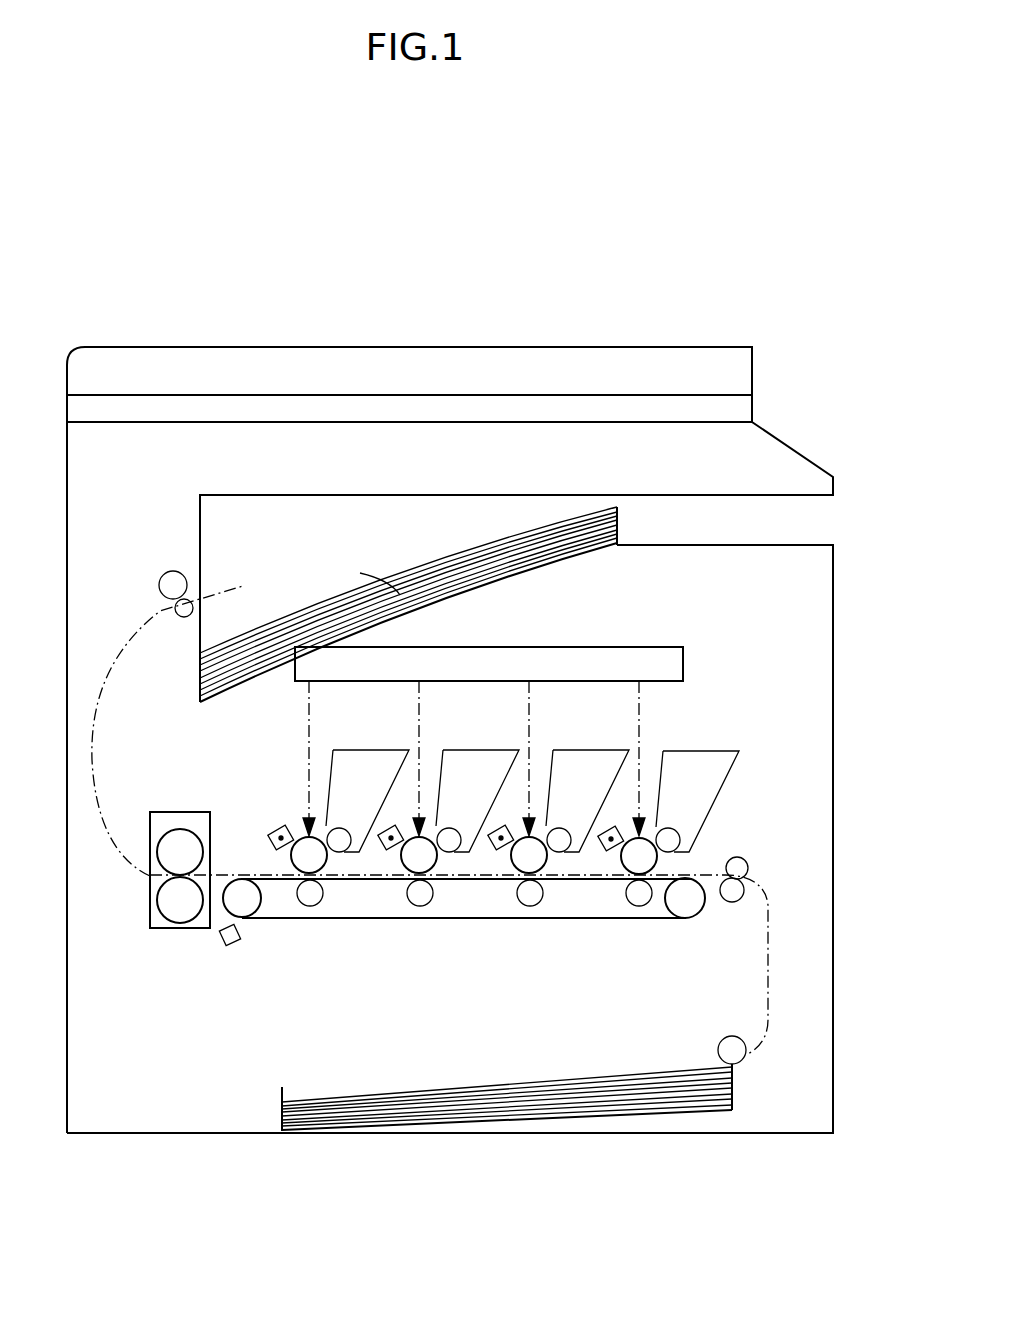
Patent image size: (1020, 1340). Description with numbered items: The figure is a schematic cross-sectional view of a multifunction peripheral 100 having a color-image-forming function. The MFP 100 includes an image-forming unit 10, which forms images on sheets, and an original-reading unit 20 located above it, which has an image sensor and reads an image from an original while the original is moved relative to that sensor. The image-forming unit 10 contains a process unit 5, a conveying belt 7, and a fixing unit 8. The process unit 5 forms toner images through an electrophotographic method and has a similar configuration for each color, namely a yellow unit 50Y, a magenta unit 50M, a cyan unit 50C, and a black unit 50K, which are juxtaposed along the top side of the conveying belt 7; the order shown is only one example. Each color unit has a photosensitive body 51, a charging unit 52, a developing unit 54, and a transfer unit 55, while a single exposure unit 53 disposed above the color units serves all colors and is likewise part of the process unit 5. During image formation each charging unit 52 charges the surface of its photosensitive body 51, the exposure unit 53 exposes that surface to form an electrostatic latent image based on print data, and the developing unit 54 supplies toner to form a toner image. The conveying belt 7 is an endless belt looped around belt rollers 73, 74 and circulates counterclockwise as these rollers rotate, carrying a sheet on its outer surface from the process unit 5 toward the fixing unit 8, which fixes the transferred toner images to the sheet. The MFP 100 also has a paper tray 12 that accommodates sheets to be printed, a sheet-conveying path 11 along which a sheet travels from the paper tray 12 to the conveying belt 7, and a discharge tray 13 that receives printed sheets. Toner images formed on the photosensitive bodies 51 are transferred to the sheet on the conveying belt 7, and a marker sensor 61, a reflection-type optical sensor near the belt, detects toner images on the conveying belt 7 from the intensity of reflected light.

The multifunction peripheral 100 is at (576, 270).
The original-reading unit 20 is at (165, 346).
The image-forming unit 10 is at (792, 645).
The discharge tray 13 is at (365, 575).
The exposure unit 53 is at (525, 657).
The developing unit 54 is at (718, 750).
The charging unit 52 is at (618, 826).
The photosensitive body 51 is at (660, 865).
The sheet-conveying path 11 is at (777, 948).
The belt roller 74 is at (240, 888).
The fixing unit 8 is at (150, 892).
The marker sensor 61 is at (219, 940).
The conveying belt 7 is at (282, 919).
The yellow unit 50Y is at (338, 900).
The magenta unit 50M is at (400, 900).
The cyan unit 50C is at (507, 900).
The black unit 50K is at (615, 900).
The transfer unit 55 is at (640, 902).
The belt roller 73 is at (686, 905).
The process unit 5 is at (290, 1002).
The paper tray 12 is at (550, 1107).